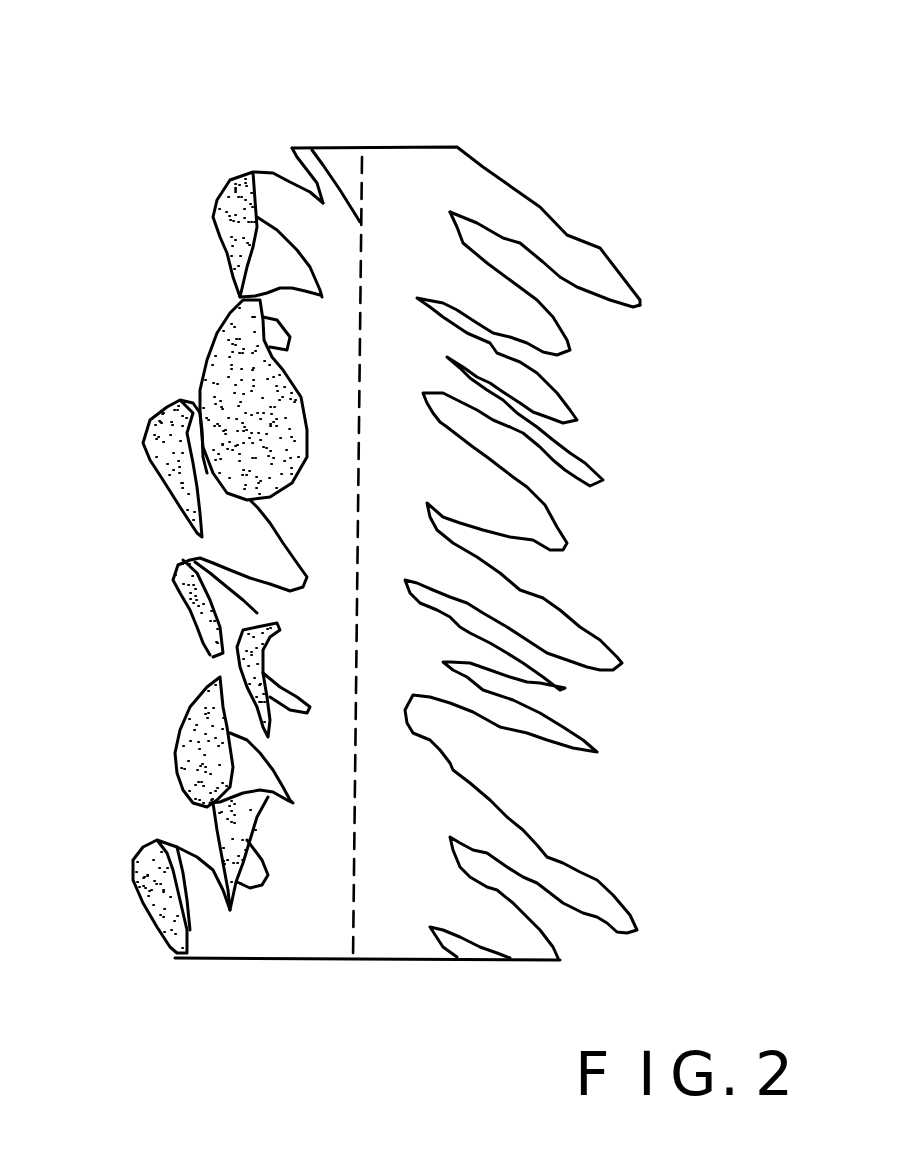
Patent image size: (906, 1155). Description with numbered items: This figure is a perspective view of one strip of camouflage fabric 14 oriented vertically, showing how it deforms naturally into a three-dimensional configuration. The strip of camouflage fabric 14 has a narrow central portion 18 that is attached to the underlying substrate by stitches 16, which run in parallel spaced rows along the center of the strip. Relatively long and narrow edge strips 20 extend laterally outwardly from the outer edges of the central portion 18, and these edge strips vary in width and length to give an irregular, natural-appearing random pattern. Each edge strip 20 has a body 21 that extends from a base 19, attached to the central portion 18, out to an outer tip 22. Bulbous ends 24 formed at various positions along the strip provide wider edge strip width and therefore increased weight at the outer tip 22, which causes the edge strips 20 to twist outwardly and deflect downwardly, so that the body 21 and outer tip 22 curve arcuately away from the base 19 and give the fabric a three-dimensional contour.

The strip of camouflage fabric 14 is at (528, 130).
The stitches 16 is at (360, 222).
The central portion 18 is at (362, 220).
The base 19 is at (240, 297).
The edge strip 20 is at (560, 601).
The body 21 is at (513, 825).
The outer tip 22 is at (577, 738).
The bulbous end 24 is at (600, 267).